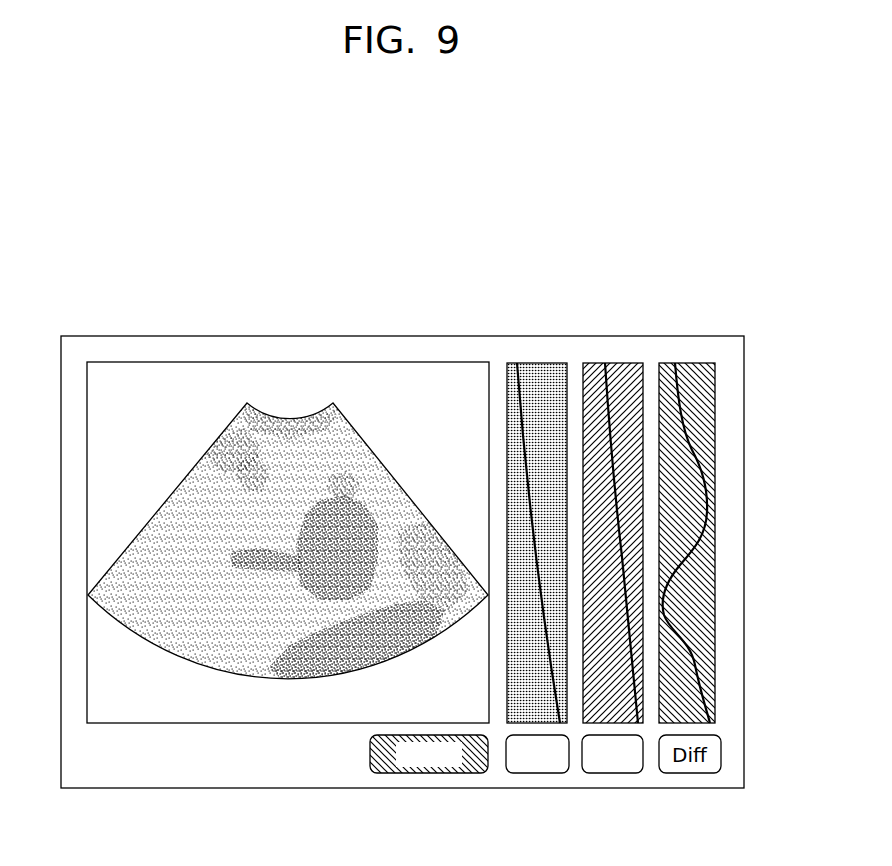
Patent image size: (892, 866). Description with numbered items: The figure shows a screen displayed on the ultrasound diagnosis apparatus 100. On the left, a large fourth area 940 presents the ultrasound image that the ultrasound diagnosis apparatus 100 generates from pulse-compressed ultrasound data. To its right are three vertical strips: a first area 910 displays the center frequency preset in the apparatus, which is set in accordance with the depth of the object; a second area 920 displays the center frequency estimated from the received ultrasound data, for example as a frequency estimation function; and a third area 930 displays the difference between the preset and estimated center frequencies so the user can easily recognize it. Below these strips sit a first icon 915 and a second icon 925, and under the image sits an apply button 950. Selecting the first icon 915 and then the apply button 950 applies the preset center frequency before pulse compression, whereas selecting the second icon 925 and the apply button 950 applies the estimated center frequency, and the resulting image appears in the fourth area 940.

The ultrasound diagnosis apparatus 100 is at (744, 562).
The first area 910 is at (537, 363).
The second area 920 is at (614, 363).
The third area 930 is at (688, 363).
The first icon 915 is at (537, 773).
The second icon 925 is at (612, 773).
The fourth area 940 is at (288, 362).
The apply button 950 is at (428, 773).